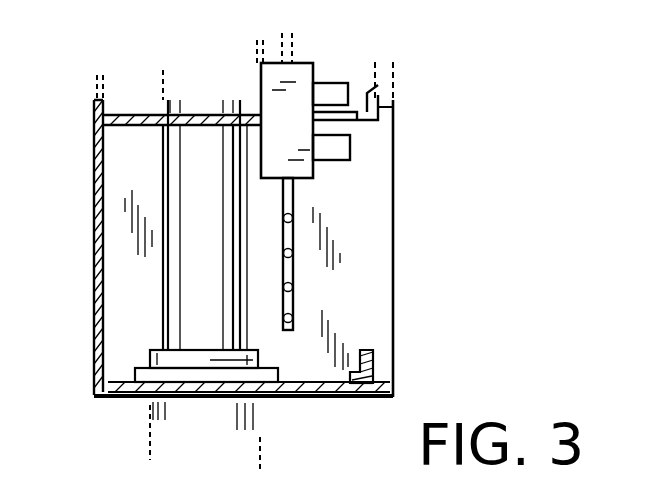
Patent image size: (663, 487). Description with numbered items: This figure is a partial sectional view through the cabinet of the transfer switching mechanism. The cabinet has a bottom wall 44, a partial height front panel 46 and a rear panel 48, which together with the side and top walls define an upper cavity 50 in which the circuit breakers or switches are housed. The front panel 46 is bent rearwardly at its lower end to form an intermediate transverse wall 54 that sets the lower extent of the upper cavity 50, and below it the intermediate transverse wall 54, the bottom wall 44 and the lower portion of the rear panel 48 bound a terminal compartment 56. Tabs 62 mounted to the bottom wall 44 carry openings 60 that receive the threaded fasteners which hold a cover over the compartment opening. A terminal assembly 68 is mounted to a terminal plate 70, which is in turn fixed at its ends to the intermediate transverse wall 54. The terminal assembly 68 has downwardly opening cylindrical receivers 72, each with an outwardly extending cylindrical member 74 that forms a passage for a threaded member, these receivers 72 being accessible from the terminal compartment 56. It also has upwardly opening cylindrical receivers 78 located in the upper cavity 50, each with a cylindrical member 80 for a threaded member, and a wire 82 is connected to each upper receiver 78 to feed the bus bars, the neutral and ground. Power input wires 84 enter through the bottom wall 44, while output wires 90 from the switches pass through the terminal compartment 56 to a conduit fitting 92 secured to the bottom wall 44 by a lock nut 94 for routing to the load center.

The bottom wall 44 is at (282, 393).
The front panel 46 is at (395, 108).
The rear panel 48 is at (95, 237).
The upper cavity 50 is at (127, 83).
The intermediate transverse wall 54 is at (123, 127).
The terminal compartment 56 is at (370, 188).
The openings 60 is at (353, 395).
The tabs 62 is at (368, 350).
The terminal assembly 68 is at (322, 190).
The terminal plate 70 is at (258, 83).
The cylindrical receivers 72 is at (263, 165).
The cylindrical member 74 is at (350, 145).
The upper cylindrical receivers 78 is at (312, 72).
The cylindrical member 80 is at (348, 84).
The wire 82 is at (293, 50).
The power input wires 84 is at (293, 218).
The output wires 90 is at (163, 313).
The conduit fitting 92 is at (148, 405).
The lock nut 94 is at (143, 372).